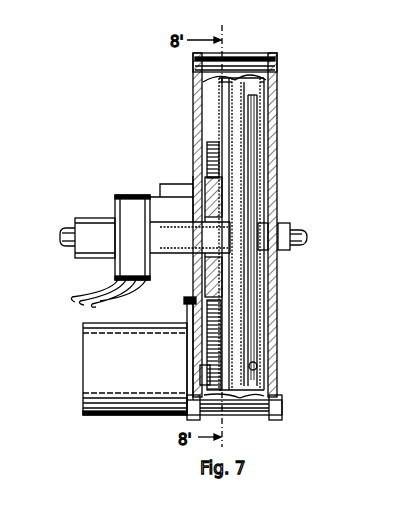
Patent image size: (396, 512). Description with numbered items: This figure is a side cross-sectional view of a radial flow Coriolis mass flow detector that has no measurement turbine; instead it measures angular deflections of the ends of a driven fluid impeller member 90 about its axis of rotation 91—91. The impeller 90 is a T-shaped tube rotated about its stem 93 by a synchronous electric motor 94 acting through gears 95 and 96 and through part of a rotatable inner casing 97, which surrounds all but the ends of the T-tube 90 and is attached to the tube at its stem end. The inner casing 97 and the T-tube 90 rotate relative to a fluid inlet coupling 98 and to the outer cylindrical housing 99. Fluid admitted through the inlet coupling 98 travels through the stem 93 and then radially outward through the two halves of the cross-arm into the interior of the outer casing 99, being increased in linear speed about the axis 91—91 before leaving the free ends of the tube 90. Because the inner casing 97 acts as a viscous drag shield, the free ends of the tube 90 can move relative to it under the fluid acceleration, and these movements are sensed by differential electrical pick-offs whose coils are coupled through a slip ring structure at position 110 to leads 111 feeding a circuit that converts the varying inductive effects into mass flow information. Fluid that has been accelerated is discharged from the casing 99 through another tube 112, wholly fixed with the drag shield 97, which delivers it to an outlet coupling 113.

The impeller member 90 is at (240, 140).
The axis of rotation 91 is at (58, 237).
The stem 93 is at (184, 250).
The synchronous electric motor 94 is at (141, 371).
The gear 95 is at (190, 395).
The gear 96 is at (204, 297).
The inner casing 97 is at (219, 118).
The fluid inlet coupling 98 is at (68, 231).
The outer cylindrical housing 99 is at (277, 121).
The slip ring structure 110 is at (133, 225).
The leads 111 is at (78, 278).
The tube 112 is at (262, 331).
The outlet coupling 113 is at (293, 228).